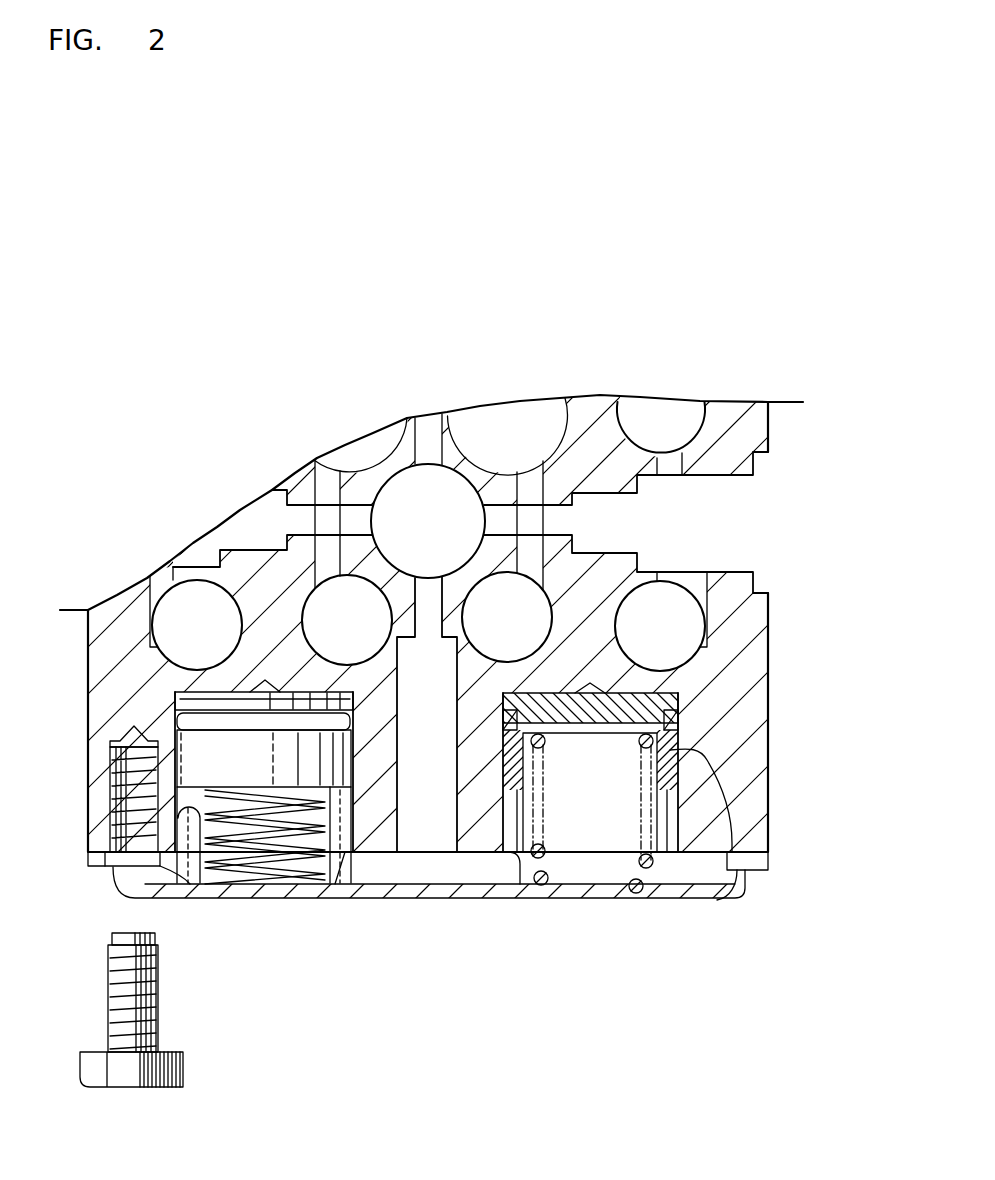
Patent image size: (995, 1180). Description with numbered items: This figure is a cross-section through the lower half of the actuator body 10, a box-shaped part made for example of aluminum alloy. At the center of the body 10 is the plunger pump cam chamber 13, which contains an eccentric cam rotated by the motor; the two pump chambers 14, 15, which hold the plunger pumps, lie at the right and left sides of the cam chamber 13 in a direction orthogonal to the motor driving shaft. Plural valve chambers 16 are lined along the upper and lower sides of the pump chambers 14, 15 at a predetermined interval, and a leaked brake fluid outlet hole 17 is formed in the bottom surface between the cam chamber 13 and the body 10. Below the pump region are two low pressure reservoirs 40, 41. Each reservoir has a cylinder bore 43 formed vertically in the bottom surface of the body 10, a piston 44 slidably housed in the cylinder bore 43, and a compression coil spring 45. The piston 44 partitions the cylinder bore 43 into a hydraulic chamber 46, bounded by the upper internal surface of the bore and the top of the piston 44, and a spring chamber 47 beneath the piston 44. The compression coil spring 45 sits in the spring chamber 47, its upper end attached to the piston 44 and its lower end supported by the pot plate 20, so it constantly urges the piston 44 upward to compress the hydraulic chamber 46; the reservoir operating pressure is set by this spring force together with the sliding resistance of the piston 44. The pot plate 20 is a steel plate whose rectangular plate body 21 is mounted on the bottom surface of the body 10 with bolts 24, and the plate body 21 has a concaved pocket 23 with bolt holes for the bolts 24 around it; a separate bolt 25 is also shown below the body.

The body 10 is at (753, 782).
The plunger pump cam chamber 13 is at (409, 537).
The pump chamber 14 is at (662, 537).
The pump chamber 15 is at (247, 517).
The valve chamber 16 is at (175, 640).
The leaked brake fluid outlet hole 17 is at (423, 837).
The pot plate 20 is at (743, 876).
The plate body 21 is at (757, 860).
The pocket 23 is at (477, 870).
The bolt 24 is at (133, 860).
The bolt 25 is at (130, 1090).
The low pressure reservoir 40 is at (690, 702).
The low pressure reservoir 41 is at (165, 697).
The cylinder bore 43 is at (197, 815).
The piston 44 is at (197, 762).
The compression coil spring 45 is at (268, 867).
The hydraulic chamber 46 is at (265, 682).
The spring chamber 47 is at (337, 833).